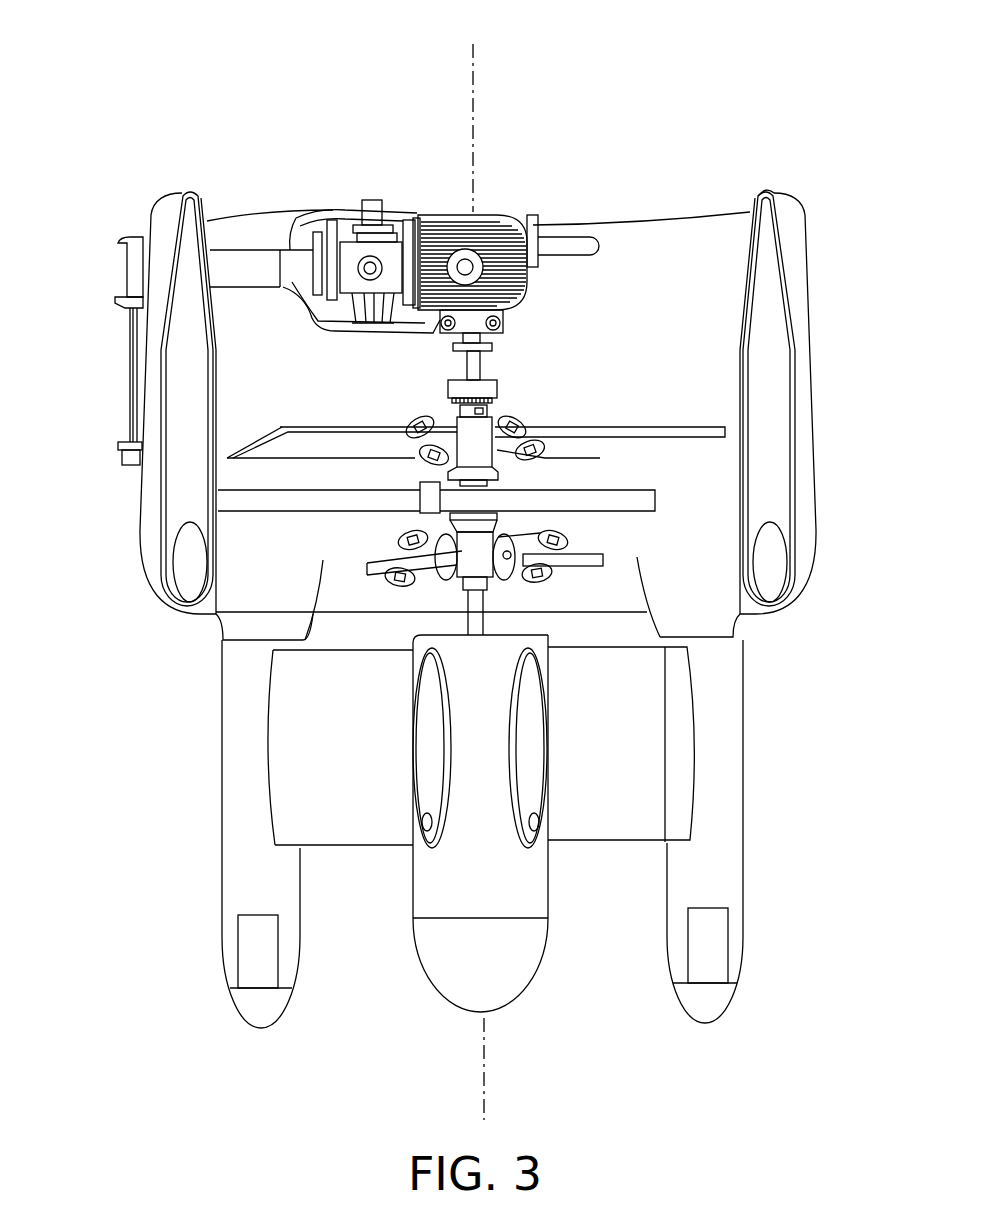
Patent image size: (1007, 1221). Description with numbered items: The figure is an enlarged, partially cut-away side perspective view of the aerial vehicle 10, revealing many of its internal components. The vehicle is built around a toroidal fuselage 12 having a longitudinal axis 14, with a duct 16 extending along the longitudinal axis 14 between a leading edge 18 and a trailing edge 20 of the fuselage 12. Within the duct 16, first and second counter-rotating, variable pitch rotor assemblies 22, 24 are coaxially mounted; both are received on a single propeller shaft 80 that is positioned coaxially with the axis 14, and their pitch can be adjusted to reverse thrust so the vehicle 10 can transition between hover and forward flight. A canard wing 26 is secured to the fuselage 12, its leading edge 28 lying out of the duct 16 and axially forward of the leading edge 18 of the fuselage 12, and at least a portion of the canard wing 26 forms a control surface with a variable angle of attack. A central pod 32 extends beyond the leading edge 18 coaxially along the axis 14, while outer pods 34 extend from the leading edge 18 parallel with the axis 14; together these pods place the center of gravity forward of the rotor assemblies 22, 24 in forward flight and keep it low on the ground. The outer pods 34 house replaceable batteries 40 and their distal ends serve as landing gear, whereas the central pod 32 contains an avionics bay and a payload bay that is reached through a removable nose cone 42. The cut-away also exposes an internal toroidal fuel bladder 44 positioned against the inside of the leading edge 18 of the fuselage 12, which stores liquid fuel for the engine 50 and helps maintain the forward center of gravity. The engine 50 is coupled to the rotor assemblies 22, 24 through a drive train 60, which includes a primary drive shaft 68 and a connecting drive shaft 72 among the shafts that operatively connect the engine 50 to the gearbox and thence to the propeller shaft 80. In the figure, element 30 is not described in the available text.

The aerial vehicle 10 is at (454, 563).
The toroidal fuselage 12 is at (505, 399).
The longitudinal axis 14 is at (480, 106).
The duct 16 is at (748, 233).
The leading edge 18 is at (779, 606).
The trailing edge 20 is at (772, 190).
The first rotor assembly 22 is at (365, 566).
The second rotor assembly 24 is at (328, 442).
The canard wing 26 is at (288, 851).
The leading edge of canard wing 28 is at (367, 850).
The fairing 30 is at (334, 648).
The central pod 32 is at (481, 823).
The outer pods 34 is at (752, 770).
The replaceable batteries 40 is at (236, 950).
The removable nose cone 42 is at (413, 947).
The internal toroidal fuel bladder 44 is at (782, 542).
The engine 50 is at (503, 215).
The drive train 60 is at (91, 351).
The primary drive shaft 68 is at (237, 247).
The connecting drive shaft 72 is at (143, 377).
The propeller shaft 80 is at (483, 363).